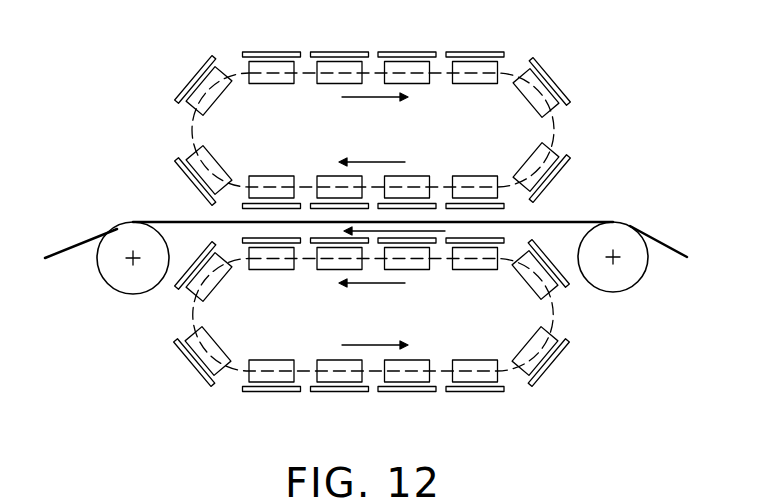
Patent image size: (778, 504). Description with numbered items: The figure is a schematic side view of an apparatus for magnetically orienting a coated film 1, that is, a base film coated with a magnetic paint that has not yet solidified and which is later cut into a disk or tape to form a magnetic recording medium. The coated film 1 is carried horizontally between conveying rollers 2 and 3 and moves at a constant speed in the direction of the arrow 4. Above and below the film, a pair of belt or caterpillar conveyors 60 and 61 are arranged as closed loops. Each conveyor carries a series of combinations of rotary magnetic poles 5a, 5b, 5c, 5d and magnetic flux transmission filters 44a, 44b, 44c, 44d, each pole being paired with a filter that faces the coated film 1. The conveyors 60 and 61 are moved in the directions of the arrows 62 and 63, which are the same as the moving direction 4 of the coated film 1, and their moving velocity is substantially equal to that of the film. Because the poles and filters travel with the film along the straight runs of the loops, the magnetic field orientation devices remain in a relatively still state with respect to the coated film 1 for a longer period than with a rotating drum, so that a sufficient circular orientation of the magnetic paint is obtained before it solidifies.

The coated film 1 is at (598, 222).
The conveying roller 2 is at (107, 275).
The conveying roller 3 is at (625, 278).
The arrow 4 is at (445, 231).
The rotary magnetic pole 5a is at (268, 176).
The rotary magnetic pole 5b is at (332, 176).
The rotary magnetic pole 5c is at (415, 176).
The rotary magnetic pole 5d is at (480, 176).
The magnetic flux transmission filter 44a is at (247, 210).
The magnetic flux transmission filter 44b is at (318, 212).
The magnetic flux transmission filter 44c is at (432, 212).
The magnetic flux transmission filter 44d is at (497, 212).
The belt or caterpillar conveyor 60 is at (240, 72).
The belt or caterpillar conveyor 61 is at (226, 367).
The arrow 62 is at (372, 160).
The arrow 63 is at (372, 290).